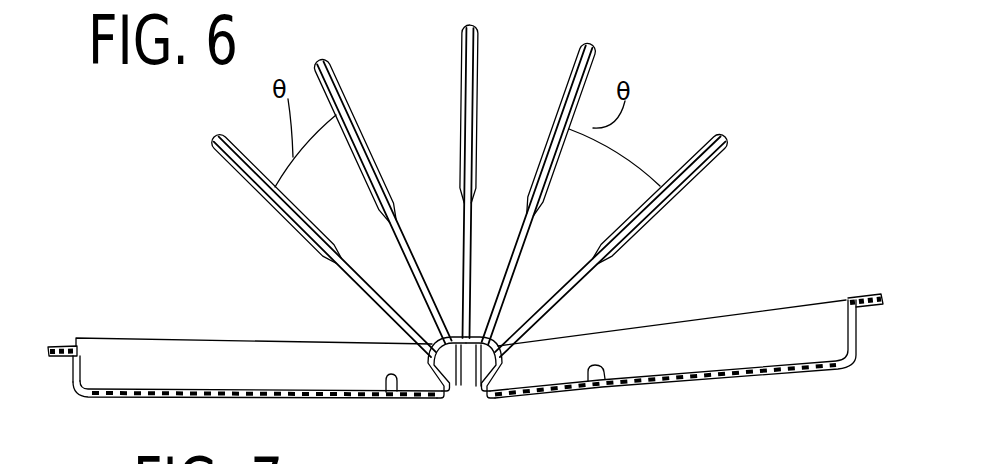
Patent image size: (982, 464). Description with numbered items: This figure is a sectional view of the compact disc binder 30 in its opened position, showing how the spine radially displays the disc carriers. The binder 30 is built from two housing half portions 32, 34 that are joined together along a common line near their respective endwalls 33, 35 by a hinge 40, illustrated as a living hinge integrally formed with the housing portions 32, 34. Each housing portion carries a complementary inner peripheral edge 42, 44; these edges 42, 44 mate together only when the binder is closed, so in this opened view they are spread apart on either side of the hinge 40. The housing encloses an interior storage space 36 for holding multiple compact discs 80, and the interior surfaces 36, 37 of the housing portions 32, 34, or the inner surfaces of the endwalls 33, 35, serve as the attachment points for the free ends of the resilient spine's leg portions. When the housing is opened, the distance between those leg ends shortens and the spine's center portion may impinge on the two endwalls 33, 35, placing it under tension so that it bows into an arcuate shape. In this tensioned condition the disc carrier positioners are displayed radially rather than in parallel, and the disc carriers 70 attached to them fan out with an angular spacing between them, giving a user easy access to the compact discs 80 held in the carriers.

The compact disc binder 30 is at (63, 373).
The housing half portion 32 is at (727, 378).
The endwall 33 is at (446, 400).
The housing half portion 34 is at (262, 396).
The endwall 35 is at (472, 397).
The interior storage space 36 is at (606, 378).
The interior surface 37 is at (386, 388).
The hinge 40 is at (491, 386).
The inner peripheral edge 42 is at (735, 313).
The inner peripheral edge 44 is at (133, 340).
The disc carrier 70 is at (574, 40).
The compact disc 80 is at (459, 128).